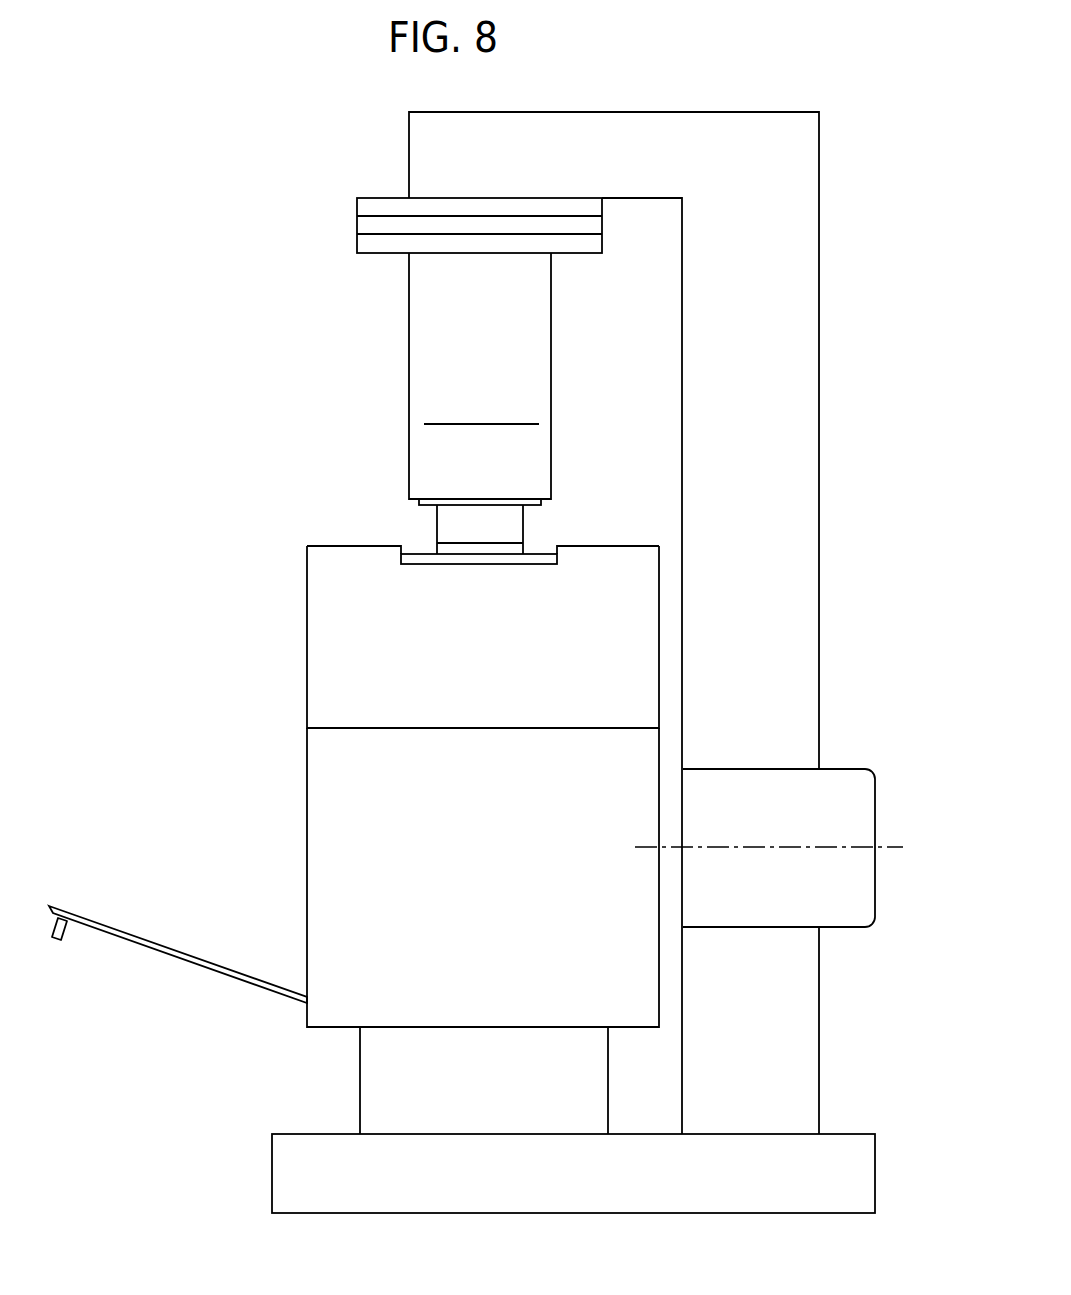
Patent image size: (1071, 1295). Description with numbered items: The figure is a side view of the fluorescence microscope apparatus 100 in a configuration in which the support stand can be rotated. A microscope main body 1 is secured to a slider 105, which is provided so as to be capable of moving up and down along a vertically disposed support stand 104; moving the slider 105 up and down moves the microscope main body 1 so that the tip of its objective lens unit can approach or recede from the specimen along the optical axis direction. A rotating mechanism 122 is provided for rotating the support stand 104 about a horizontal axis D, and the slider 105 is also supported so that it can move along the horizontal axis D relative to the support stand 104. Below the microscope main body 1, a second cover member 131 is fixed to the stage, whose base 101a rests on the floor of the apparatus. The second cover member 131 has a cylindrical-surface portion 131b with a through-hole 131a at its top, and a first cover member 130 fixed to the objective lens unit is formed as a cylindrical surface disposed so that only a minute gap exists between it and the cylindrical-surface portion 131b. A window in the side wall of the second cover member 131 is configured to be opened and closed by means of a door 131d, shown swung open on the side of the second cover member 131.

The fluorescence microscope apparatus 100 is at (489, 662).
The support stand 104 is at (802, 372).
The slider 105 is at (585, 255).
The microscope main body 1 is at (536, 388).
The first cover member 130 is at (545, 556).
The through-hole 131a is at (405, 547).
The cylindrical-surface portion 131b is at (330, 648).
The second cover member 131 is at (307, 800).
The door 131d is at (180, 951).
The rotating mechanism 122 is at (755, 768).
The horizontal axis D is at (761, 846).
The base 101a is at (503, 1134).